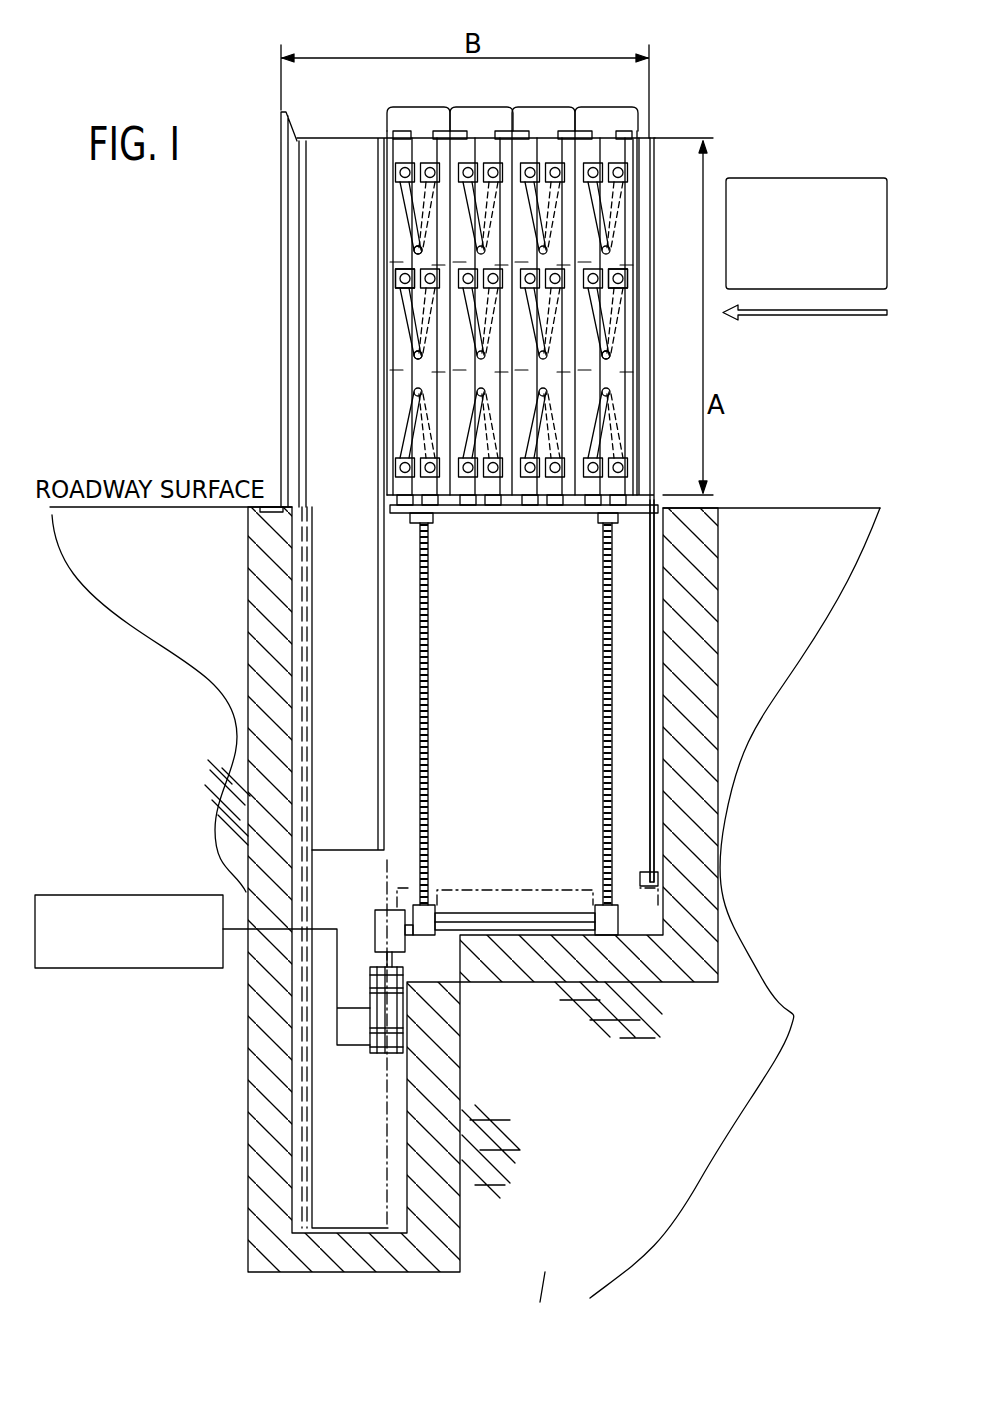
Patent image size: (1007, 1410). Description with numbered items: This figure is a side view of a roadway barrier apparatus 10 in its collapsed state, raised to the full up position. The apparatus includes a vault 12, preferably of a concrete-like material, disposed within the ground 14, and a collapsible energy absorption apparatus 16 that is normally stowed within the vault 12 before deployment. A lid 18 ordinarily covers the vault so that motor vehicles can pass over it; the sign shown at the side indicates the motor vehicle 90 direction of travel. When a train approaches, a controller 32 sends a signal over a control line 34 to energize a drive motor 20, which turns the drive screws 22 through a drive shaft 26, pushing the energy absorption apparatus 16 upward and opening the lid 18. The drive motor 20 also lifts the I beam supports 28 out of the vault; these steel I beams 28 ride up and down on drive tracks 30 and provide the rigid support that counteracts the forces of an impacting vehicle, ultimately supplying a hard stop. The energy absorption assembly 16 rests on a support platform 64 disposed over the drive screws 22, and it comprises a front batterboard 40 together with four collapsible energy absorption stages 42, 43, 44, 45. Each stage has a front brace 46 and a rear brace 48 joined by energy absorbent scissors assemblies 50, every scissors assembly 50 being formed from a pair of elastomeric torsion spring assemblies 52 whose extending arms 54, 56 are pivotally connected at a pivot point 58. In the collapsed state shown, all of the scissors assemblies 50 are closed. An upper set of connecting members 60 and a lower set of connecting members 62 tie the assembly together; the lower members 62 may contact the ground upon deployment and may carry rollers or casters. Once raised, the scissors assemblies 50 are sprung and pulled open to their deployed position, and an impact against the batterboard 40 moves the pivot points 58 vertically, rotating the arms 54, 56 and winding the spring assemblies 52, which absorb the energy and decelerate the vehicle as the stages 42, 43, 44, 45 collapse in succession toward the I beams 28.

The roadway barrier apparatus 10 is at (750, 461).
The vault 12 is at (718, 612).
The ground 14 is at (680, 1022).
The collapsible energy absorption apparatus 16 is at (653, 240).
The lid 18 is at (282, 236).
The drive motor 20 is at (372, 1010).
The drive screws 22 is at (602, 642).
The drive shaft 26 is at (521, 910).
The I beam supports 28 is at (335, 335).
The drive tracks 30 is at (300, 1166).
The controller 32 is at (112, 895).
The control line 34 is at (337, 977).
The front batterboard 40 is at (655, 150).
The collapsible energy absorption stage 42 is at (604, 108).
The collapsible energy absorption stage 43 is at (545, 108).
The collapsible energy absorption stage 44 is at (480, 108).
The collapsible energy absorption stage 45 is at (420, 108).
The front brace 46 is at (632, 410).
The rear brace 48 is at (589, 375).
The energy absorbent scissors assembly 50 is at (624, 343).
The elastomeric torsion spring assembly 52 is at (395, 280).
The extending arm 54 is at (610, 213).
The extending arm 56 is at (598, 197).
The pivot point 58 is at (414, 246).
The upper connecting members 60 is at (633, 132).
The lower connecting members 62 is at (521, 514).
The support platform 64 is at (463, 517).
The motor vehicle 90 is at (840, 178).